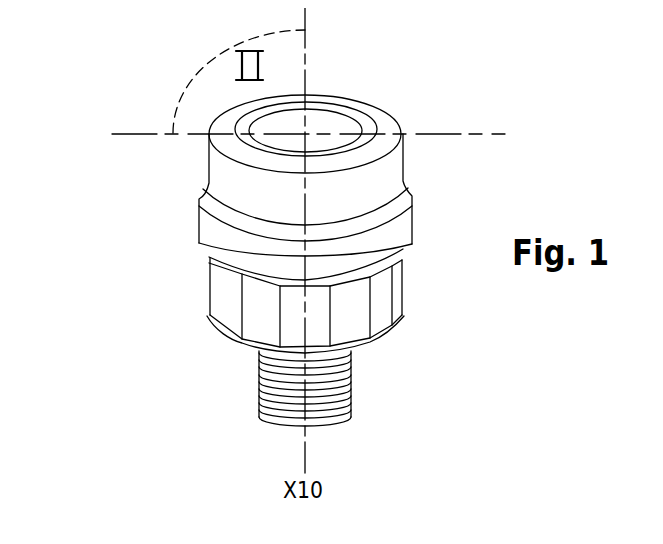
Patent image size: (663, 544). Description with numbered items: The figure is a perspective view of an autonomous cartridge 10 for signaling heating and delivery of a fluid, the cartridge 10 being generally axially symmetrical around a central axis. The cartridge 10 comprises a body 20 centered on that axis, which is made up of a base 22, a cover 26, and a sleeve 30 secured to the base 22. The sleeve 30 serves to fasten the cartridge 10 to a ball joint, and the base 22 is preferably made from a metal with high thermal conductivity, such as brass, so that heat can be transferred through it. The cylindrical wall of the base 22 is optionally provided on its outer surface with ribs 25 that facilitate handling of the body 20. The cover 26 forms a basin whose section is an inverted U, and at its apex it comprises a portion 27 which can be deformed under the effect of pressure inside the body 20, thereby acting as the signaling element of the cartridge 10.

The cartridge 10 is at (147, 52).
The body 20 is at (115, 220).
The base 22 is at (208, 286).
The ribs 25 is at (386, 293).
The cover 26 is at (206, 232).
The portion 27 is at (327, 114).
The sleeve 30 is at (259, 383).